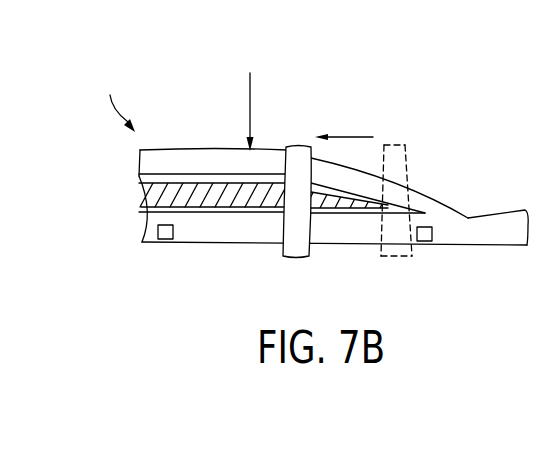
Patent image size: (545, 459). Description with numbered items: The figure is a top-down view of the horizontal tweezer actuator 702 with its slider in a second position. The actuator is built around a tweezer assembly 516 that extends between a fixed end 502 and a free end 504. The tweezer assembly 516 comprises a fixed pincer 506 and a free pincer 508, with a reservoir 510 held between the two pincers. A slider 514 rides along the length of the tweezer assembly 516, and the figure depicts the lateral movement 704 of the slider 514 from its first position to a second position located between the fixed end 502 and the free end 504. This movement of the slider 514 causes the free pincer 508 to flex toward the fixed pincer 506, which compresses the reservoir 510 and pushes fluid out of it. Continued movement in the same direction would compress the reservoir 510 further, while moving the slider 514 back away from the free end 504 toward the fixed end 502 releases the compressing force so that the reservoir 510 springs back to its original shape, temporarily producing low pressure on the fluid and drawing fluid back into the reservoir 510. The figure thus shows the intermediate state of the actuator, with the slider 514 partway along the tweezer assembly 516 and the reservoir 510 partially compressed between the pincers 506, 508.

The fixed end 502 is at (467, 219).
The free end 504 is at (147, 165).
The fixed pincer 506 is at (152, 228).
The free pincer 508 is at (205, 149).
The reservoir 510 is at (148, 193).
The slider 514 is at (297, 146).
The tweezer assembly 516 is at (247, 245).
The horizontal tweezer actuator 702 is at (115, 98).
The lateral movement 704 is at (348, 136).